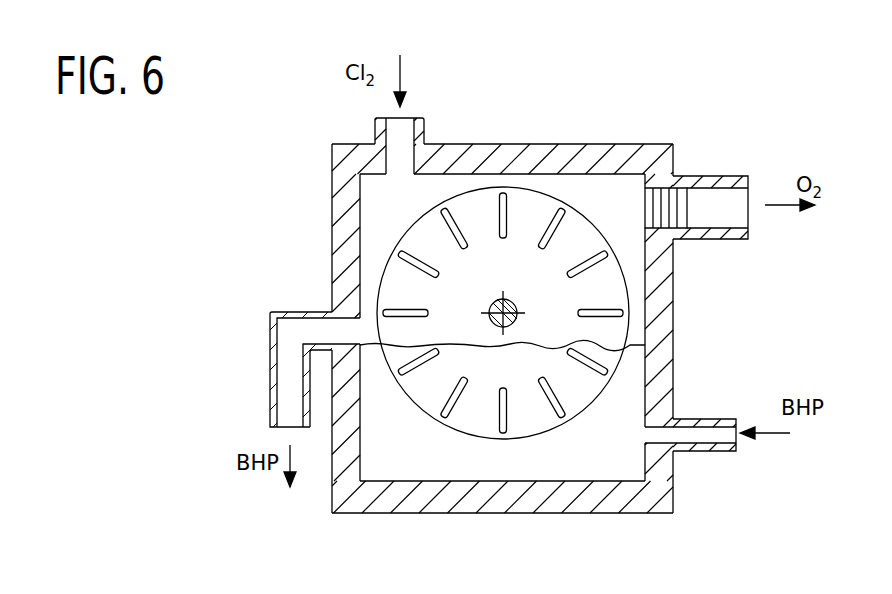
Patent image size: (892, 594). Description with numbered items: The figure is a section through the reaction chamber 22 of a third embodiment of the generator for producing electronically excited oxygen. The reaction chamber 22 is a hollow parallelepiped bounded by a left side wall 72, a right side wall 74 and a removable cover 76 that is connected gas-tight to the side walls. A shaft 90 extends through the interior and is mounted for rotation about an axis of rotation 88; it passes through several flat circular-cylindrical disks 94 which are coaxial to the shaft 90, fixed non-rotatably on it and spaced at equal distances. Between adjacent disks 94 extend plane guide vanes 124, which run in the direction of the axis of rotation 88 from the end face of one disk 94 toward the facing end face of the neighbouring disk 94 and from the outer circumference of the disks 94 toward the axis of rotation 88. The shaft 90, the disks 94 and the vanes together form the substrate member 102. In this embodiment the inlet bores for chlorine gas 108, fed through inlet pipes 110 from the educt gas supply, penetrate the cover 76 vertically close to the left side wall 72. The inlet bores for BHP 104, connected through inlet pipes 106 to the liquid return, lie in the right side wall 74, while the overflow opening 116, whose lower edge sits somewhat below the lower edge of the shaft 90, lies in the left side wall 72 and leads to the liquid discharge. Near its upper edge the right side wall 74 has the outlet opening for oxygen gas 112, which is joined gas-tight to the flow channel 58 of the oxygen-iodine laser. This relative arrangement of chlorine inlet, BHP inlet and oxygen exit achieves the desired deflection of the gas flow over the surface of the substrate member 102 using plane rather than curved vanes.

The reaction chamber 22 is at (676, 513).
The flow channel 58 is at (728, 192).
The left side wall 72 is at (340, 290).
The right side wall 74 is at (662, 300).
The cover 76 is at (553, 150).
The axis of rotation 88 is at (490, 316).
The shaft 90 is at (506, 301).
The disk 94 is at (408, 230).
The substrate member 102 is at (558, 433).
The inlet bores for BHP 104 is at (696, 446).
The inlet pipes 106 is at (720, 427).
The inlet bores for chlorine gas 108 is at (408, 137).
The inlet pipes 110 is at (410, 117).
The outlet opening for oxygen gas 112 is at (688, 196).
The overflow opening 116 is at (285, 397).
The plane guide vanes 124 is at (562, 222).